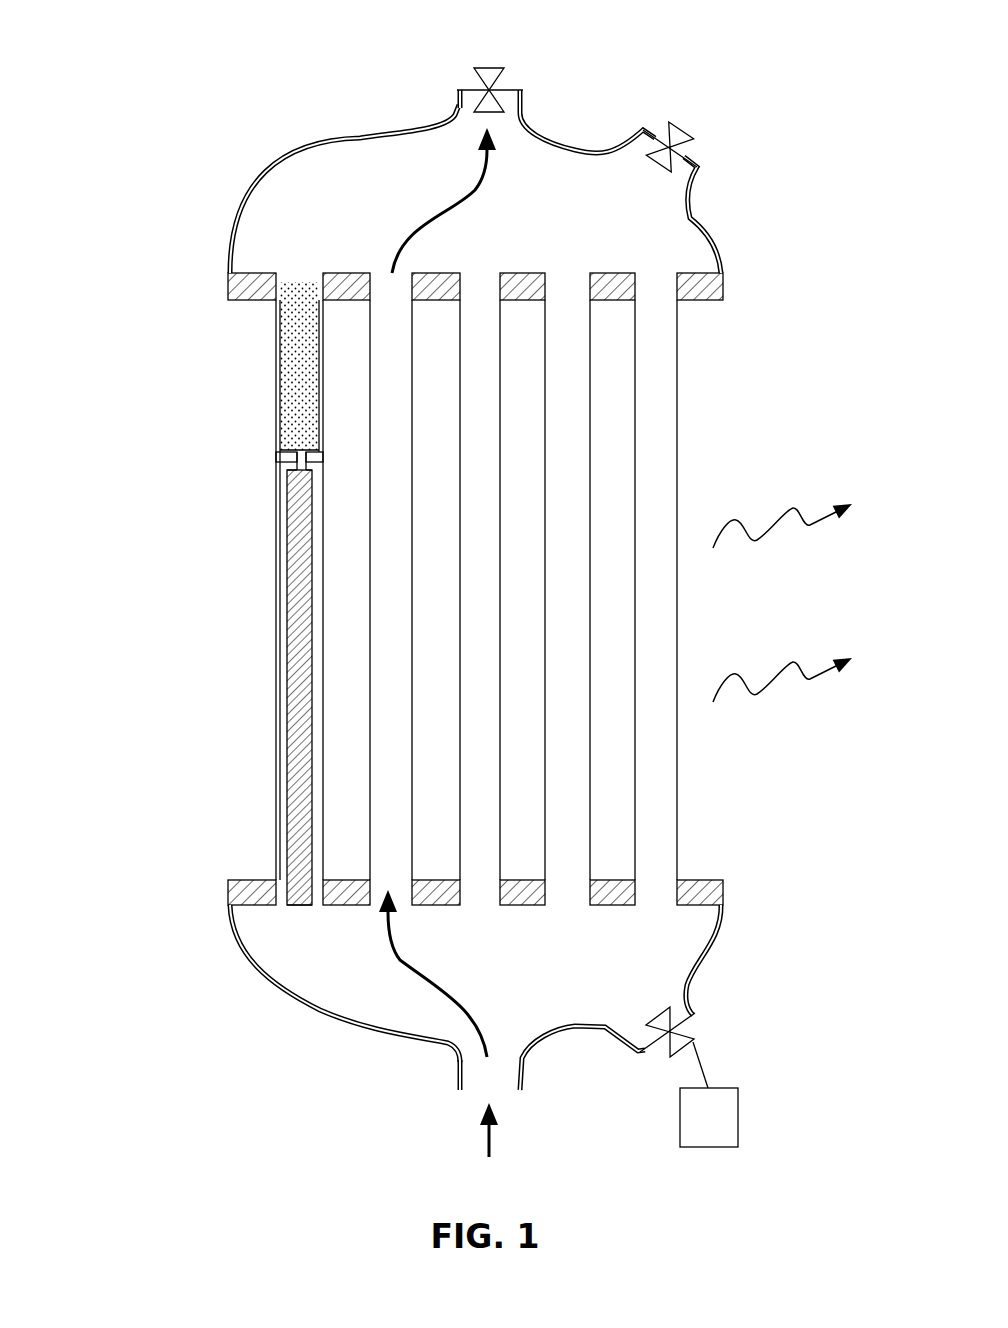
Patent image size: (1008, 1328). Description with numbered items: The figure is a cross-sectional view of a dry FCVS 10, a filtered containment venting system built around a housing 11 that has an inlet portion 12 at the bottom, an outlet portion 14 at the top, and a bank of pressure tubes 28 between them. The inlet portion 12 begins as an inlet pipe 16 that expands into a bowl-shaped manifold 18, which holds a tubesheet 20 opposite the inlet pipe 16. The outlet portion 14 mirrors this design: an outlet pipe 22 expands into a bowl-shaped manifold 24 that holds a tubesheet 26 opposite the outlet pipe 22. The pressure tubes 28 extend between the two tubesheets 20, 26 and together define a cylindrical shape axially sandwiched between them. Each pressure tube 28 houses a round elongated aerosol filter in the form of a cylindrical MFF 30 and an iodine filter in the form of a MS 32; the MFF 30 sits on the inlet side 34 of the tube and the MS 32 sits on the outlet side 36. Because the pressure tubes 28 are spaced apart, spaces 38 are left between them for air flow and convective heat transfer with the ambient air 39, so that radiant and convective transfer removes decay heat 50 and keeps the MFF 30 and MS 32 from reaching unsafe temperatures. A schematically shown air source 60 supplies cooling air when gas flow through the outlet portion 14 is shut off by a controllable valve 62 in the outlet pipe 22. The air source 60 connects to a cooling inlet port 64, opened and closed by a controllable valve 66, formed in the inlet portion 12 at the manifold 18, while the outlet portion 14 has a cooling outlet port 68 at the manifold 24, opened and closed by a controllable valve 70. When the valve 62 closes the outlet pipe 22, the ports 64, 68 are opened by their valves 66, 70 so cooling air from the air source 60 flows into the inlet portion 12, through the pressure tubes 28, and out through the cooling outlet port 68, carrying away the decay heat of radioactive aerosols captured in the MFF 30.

The dry FCVS 10 is at (121, 32).
The housing 11 is at (737, 931).
The inlet portion 12 is at (585, 1087).
The outlet portion 14 is at (614, 118).
The inlet pipe 16 is at (455, 1075).
The bowl-shaped manifold 18 is at (268, 983).
The tubesheet 20 is at (742, 891).
The outlet pipe 22 is at (456, 100).
The bowl-shaped manifold 24 is at (308, 168).
The tubesheet 26 is at (747, 285).
The pressure tubes 28 is at (280, 694).
The MFF 30 is at (287, 520).
The MS 32 is at (282, 360).
The inlet side 34 is at (303, 922).
The outlet side 36 is at (298, 254).
The spaces 38 is at (358, 602).
The ambient air 39 is at (828, 369).
The decay heat 50 is at (793, 508).
The air source 60 is at (722, 1130).
The controllable valve 62 is at (541, 28).
The cooling inlet port 64 is at (716, 1004).
The controllable valve 66 is at (700, 1048).
The cooling outlet port 68 is at (718, 184).
The controllable valve 70 is at (687, 130).